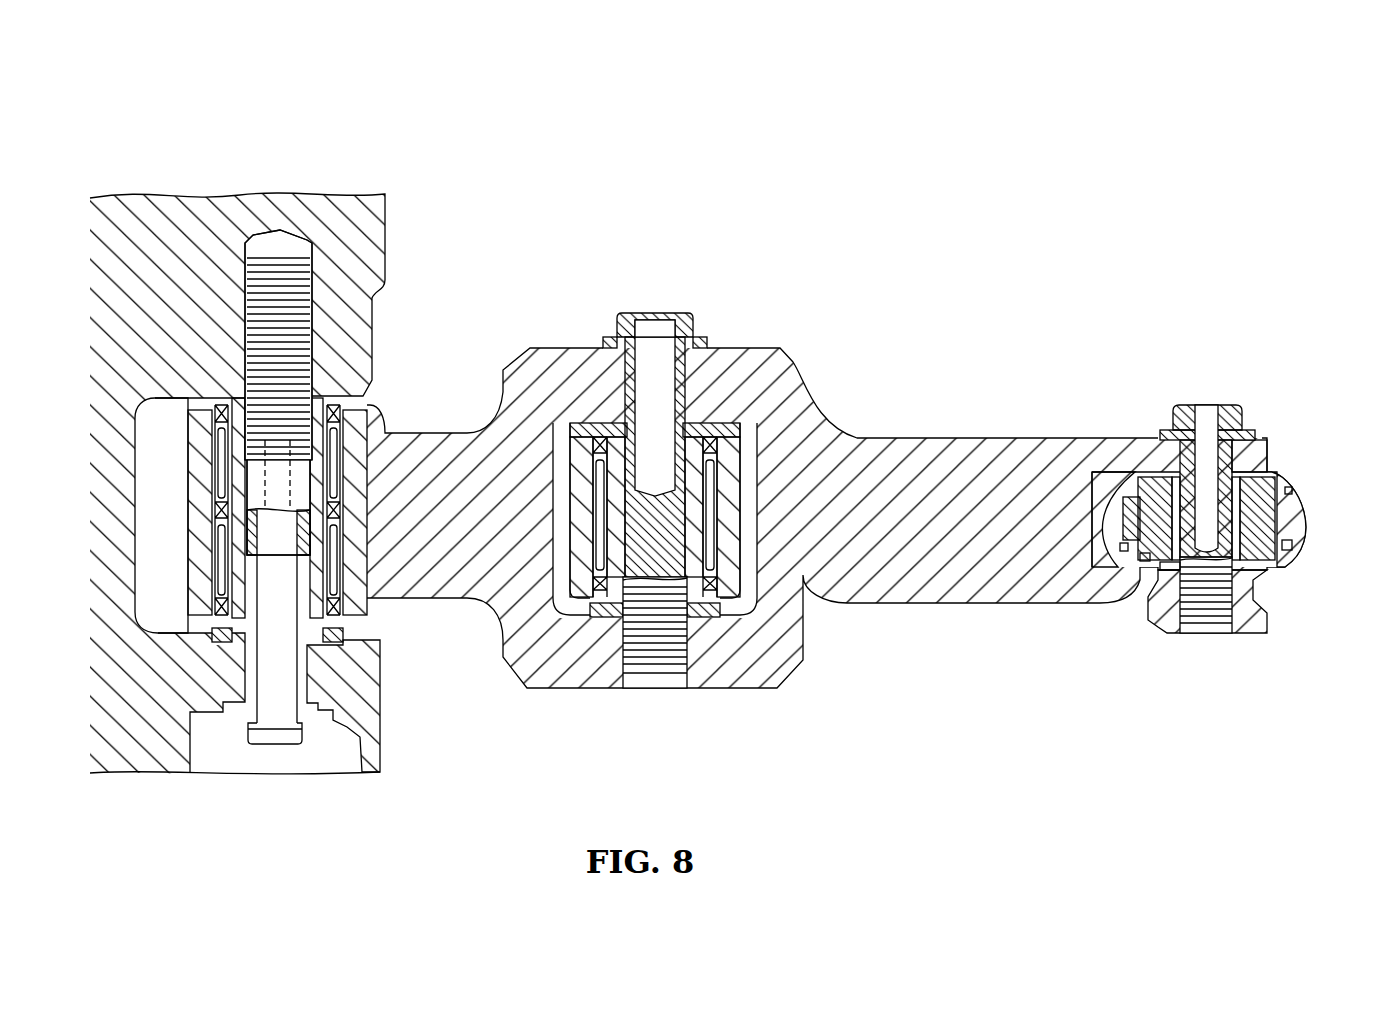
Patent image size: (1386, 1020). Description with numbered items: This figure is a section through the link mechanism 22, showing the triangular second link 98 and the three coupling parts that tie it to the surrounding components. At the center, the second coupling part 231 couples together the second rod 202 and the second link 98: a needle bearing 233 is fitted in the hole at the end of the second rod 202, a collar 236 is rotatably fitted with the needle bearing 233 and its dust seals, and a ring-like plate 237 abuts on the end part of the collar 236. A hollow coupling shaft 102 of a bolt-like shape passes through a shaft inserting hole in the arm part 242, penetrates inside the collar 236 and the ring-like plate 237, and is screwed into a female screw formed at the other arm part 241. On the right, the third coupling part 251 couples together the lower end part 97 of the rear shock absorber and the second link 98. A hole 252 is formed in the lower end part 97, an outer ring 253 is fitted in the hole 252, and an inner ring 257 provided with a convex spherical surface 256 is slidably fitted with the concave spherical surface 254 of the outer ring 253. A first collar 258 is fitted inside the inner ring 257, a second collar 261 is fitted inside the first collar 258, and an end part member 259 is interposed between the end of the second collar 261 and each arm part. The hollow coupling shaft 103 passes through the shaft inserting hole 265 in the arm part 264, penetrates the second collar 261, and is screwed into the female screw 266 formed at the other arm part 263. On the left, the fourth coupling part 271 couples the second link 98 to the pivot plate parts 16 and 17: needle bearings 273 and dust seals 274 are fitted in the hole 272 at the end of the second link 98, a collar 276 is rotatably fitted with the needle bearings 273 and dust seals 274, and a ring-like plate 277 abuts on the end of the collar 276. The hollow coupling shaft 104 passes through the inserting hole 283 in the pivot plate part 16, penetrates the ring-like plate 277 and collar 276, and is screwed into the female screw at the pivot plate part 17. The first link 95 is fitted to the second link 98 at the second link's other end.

The pivot plate part 16 is at (393, 677).
The pivot plate part 17 is at (367, 233).
The link mechanism 22 is at (995, 196).
The first link 95 is at (757, 565).
The lower end part 97 is at (1307, 505).
The second link 98 is at (797, 339).
The hollow coupling shaft 102 is at (653, 312).
The hollow coupling shaft 103 is at (1183, 490).
The hollow coupling shaft 104 is at (293, 744).
The second rod 202 is at (813, 427).
The second coupling part 231 is at (704, 302).
The needle bearing 233 is at (752, 452).
The collar 236 is at (568, 455).
The ring-like plate 237 is at (737, 590).
The arm part 241 is at (570, 683).
The arm part 242 is at (577, 357).
The third coupling part 251 is at (1169, 346).
The hole 252 is at (1265, 462).
The outer ring 253 is at (1310, 510).
The concave spherical surface 254 is at (1310, 530).
The convex spherical surface 256 is at (1093, 525).
The inner ring 257 is at (1127, 550).
The first collar 258 is at (1150, 605).
The end part member 259 is at (1163, 530).
The second collar 261 is at (1170, 570).
The arm part 263 is at (1250, 605).
The arm part 264 is at (1262, 455).
The shaft inserting hole 265 is at (1208, 413).
The female screw 266 is at (1193, 600).
The fourth coupling part 271 is at (459, 299).
The hole 272 is at (320, 393).
The needle bearing 273 is at (367, 423).
The dust seal 274 is at (200, 405).
The collar 276 is at (368, 448).
The ring-like plate 277 is at (352, 585).
The inserting hole 283 is at (263, 292).